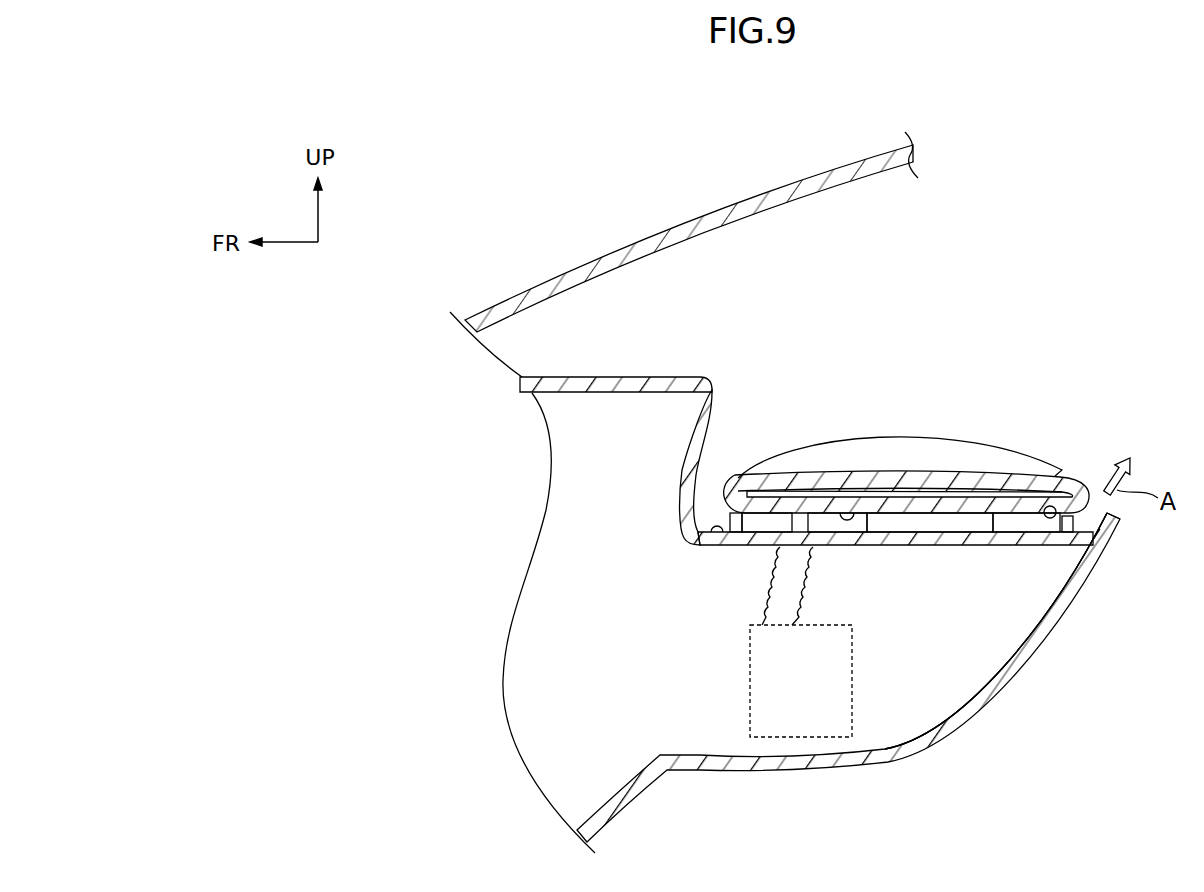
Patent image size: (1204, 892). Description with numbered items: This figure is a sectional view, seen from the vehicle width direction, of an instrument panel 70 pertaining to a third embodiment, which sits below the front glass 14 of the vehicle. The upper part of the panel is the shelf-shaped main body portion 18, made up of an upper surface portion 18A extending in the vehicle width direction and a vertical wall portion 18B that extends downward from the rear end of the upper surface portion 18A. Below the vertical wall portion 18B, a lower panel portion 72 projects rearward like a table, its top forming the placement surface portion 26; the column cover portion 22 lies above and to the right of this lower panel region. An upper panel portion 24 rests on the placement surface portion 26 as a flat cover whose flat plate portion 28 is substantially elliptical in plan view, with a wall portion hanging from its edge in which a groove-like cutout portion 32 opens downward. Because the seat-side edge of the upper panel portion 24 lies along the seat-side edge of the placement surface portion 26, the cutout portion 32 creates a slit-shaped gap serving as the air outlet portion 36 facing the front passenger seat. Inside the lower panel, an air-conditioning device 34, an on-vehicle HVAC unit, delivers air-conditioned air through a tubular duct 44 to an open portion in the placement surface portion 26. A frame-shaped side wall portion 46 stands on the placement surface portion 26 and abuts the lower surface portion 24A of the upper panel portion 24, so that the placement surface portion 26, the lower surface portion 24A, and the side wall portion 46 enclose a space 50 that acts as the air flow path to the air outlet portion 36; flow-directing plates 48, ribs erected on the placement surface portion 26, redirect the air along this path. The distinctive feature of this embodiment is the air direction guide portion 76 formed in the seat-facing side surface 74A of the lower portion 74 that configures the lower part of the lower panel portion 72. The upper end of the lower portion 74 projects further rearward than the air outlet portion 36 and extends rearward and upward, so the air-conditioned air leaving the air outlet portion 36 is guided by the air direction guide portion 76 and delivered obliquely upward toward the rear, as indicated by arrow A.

The front glass 14 is at (693, 217).
The main body portion 18 is at (806, 461).
The upper surface portion 18A is at (592, 377).
The vertical wall portion 18B is at (708, 410).
The column cover portion 22 is at (970, 438).
The upper panel portion 24 is at (936, 448).
The lower surface portion 24A is at (848, 513).
The placement surface portion 26 is at (713, 547).
The flat plate portion 28 is at (907, 470).
The cutout portion 32 is at (1058, 506).
The air-conditioning device 34 is at (852, 663).
The air outlet portion 36 is at (1095, 540).
The duct 44 is at (797, 603).
The side wall portion 46 is at (743, 521).
The flow-directing plates 48 is at (977, 528).
The space 50 is at (828, 525).
The instrument panel 70 is at (866, 775).
The lower panel portion 72 is at (950, 742).
The lower portion 74 is at (886, 679).
The side surface 74A is at (1017, 670).
The air direction guide portion 76 is at (1117, 530).